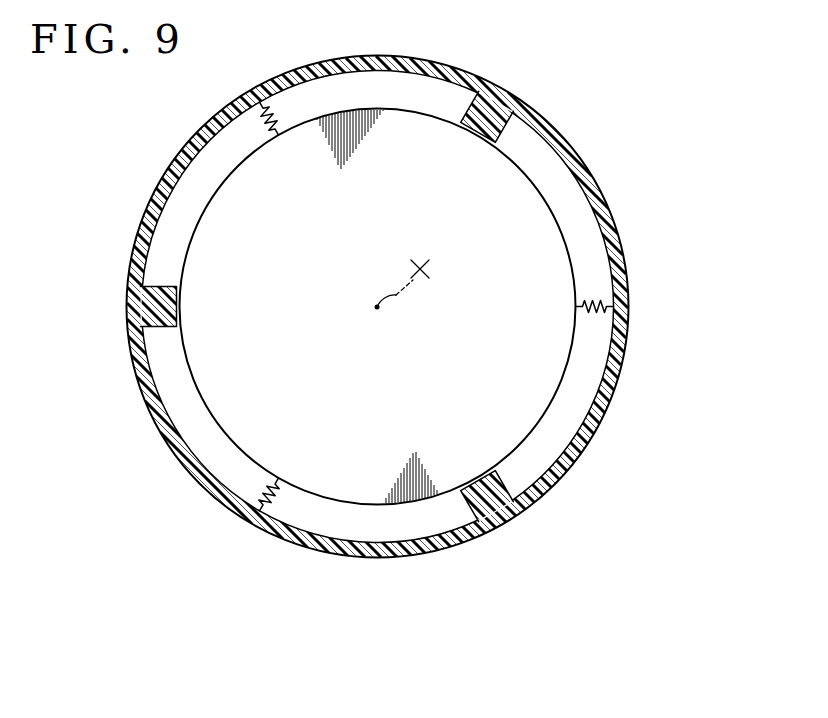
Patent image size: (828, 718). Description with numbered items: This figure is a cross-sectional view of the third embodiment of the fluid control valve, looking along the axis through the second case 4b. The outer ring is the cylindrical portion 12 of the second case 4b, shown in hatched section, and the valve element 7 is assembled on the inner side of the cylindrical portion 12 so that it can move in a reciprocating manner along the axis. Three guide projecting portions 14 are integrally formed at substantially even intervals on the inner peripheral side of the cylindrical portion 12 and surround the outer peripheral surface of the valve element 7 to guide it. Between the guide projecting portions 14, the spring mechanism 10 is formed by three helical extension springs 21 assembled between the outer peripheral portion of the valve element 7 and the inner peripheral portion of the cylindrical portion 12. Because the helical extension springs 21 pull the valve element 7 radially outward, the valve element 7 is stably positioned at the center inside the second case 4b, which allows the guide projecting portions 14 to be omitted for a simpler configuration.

The second case 4b is at (414, 307).
The cylindrical portion 12 is at (588, 175).
The guide projecting portion 14 is at (498, 134).
The spring mechanism 10 is at (429, 318).
The helical extension spring 21 is at (268, 128).
The valve element 7 is at (557, 373).